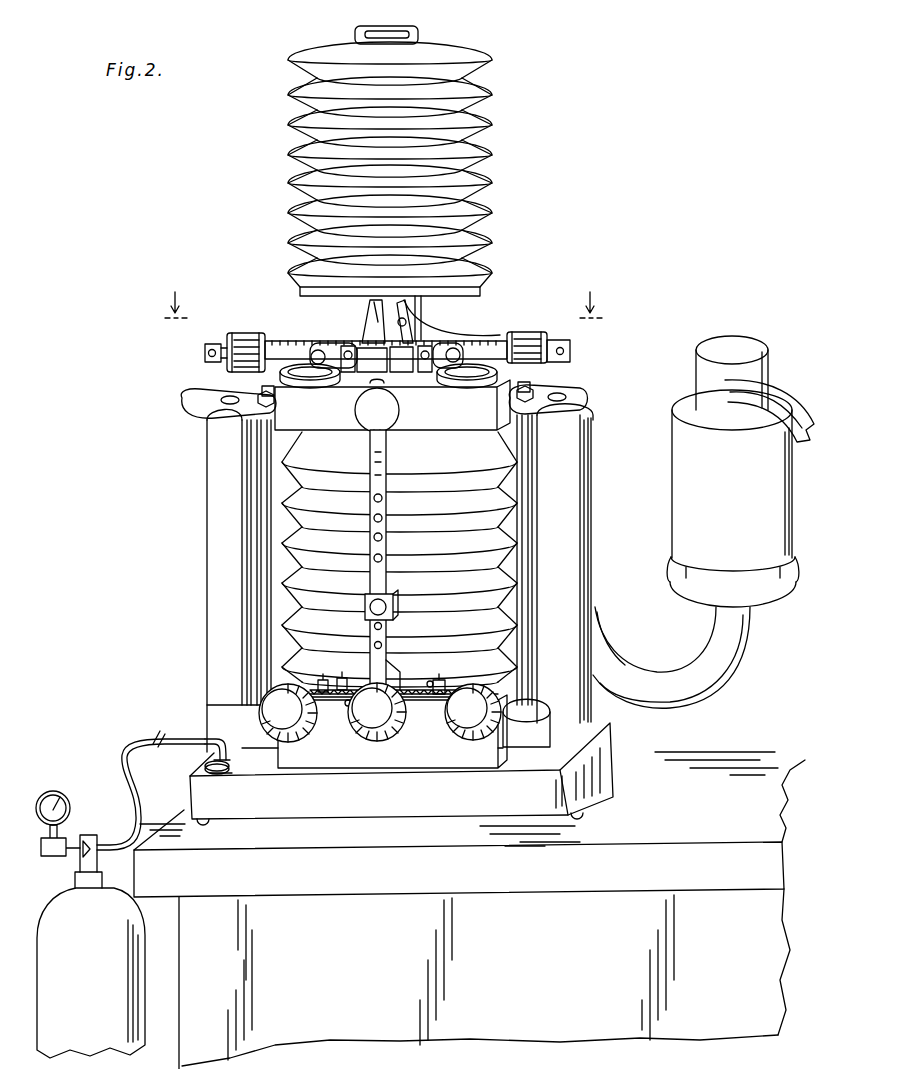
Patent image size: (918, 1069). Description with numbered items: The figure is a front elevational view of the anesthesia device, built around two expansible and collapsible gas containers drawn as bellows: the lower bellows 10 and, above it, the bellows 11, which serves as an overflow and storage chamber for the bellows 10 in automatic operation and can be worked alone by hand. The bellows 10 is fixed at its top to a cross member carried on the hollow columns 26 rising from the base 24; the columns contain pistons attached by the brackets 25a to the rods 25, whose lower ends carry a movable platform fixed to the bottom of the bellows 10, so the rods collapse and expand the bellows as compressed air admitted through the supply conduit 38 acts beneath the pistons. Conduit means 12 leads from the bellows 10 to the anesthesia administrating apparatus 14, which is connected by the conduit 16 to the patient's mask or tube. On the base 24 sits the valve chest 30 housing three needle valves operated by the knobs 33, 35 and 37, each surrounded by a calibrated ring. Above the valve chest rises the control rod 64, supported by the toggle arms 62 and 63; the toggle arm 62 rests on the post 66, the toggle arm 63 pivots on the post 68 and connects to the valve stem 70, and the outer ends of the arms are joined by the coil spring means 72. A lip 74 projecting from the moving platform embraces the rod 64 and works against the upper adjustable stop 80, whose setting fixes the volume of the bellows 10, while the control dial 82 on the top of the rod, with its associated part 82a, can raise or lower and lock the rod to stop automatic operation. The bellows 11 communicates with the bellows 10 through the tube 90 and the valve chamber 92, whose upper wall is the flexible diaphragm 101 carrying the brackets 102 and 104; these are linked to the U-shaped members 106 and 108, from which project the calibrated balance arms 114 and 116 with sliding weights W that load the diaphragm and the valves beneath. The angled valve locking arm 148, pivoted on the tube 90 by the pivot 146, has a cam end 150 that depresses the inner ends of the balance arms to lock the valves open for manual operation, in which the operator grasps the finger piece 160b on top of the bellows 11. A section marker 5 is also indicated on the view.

The section line 5- 5 is at (383, 317).
The gas container 10 is at (496, 501).
The gas container 11 is at (483, 111).
The conduit means 12 is at (632, 671).
The anesthesia administrating apparatus 14 is at (744, 502).
The conduit 16 is at (784, 408).
The base 24 is at (416, 807).
The rods 25 is at (258, 604).
The brackets 25a is at (233, 392).
The hollow columns 26 is at (236, 556).
The valve chest 30 is at (420, 758).
The knob 33 is at (292, 720).
The knob 35 is at (382, 719).
The knob 37 is at (477, 719).
The supply conduit 38 is at (208, 755).
The toggle arm 62 is at (404, 687).
The toggle arm 63 is at (352, 686).
The control rod 64 is at (388, 488).
The post 66 is at (457, 678).
The post 68 is at (342, 678).
The valve stem 70 is at (323, 682).
The coil spring means 72 is at (428, 684).
The lip 74 is at (396, 668).
The upper adjustable stop 80 is at (396, 608).
The control dial 82 is at (388, 420).
The pointer 82a is at (387, 445).
The tube 90 is at (428, 309).
The valve chamber 92 is at (430, 415).
The flexible diaphragm 101 is at (282, 378).
The bracket 102 is at (316, 376).
The bracket 104 is at (455, 370).
The U-shaped member 106 is at (351, 357).
The U-shaped member 108 is at (426, 357).
The calibrated balance arm 114 is at (279, 343).
The calibrated balance arm 116 is at (500, 338).
The pivot 146 is at (440, 334).
The angled valve locking arm 148 is at (364, 334).
The cam end 150 is at (418, 326).
The finger piece 160b is at (420, 38).
The weights W is at (251, 336).